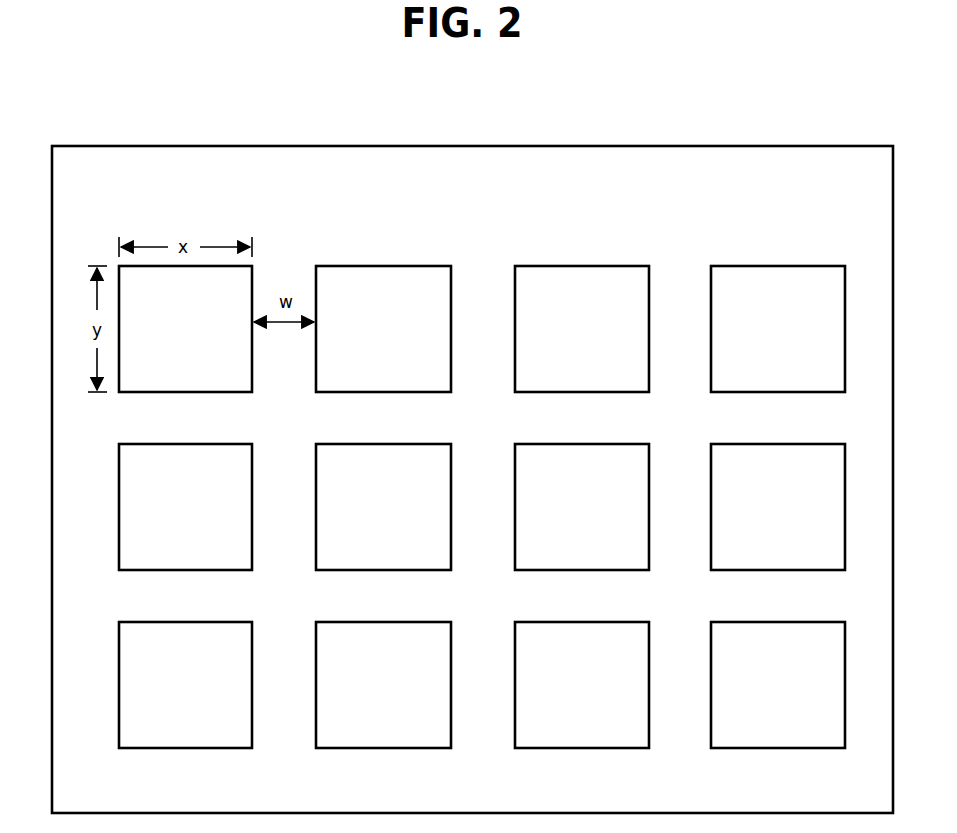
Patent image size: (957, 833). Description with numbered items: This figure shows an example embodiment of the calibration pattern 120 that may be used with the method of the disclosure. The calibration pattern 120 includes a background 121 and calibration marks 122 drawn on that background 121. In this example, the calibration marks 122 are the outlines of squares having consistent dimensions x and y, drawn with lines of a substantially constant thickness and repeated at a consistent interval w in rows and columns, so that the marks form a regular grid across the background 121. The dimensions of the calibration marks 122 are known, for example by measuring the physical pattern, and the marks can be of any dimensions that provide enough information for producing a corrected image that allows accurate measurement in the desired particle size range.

The calibration pattern 120 is at (410, 146).
The background 121 is at (512, 184).
The calibration marks 122 is at (809, 262).